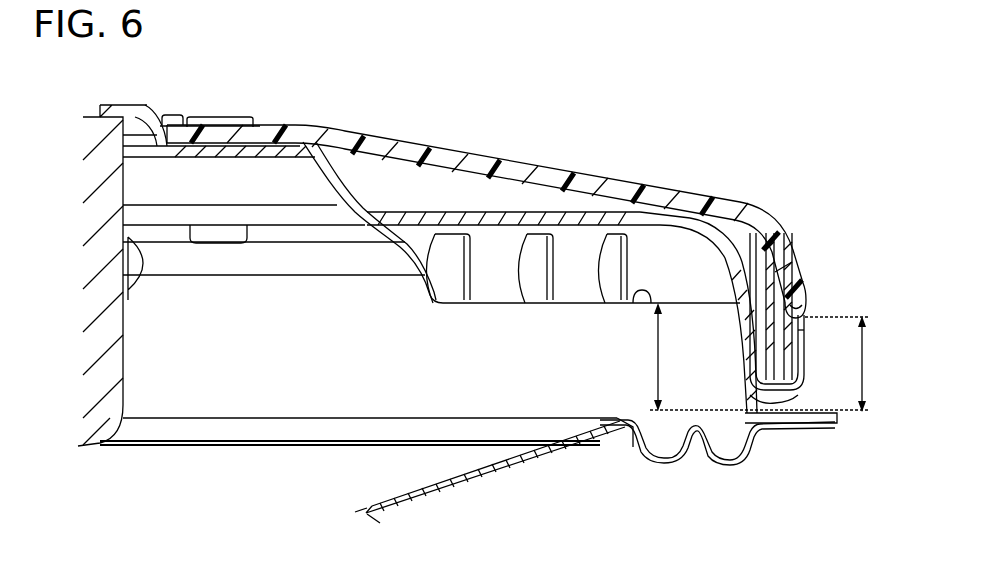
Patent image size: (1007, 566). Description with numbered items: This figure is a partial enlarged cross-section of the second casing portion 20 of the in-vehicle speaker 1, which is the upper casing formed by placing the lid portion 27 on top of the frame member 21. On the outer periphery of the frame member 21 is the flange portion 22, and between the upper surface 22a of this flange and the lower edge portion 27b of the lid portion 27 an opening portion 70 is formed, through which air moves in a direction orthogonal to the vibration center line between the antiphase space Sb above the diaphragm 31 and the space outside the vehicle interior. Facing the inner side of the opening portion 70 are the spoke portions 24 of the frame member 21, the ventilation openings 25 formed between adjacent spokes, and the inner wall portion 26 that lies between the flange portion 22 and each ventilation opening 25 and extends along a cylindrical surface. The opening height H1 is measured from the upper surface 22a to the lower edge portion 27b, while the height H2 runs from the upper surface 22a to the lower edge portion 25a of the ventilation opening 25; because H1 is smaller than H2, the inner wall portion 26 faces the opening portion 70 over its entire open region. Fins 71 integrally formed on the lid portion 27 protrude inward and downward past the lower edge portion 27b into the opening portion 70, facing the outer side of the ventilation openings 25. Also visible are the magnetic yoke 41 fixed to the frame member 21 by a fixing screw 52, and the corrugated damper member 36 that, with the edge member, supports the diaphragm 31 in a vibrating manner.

The in-vehicle speaker 1 is at (624, 84).
The second casing portion 20 is at (509, 165).
The frame member 21 is at (417, 203).
The flange portion 22 is at (830, 423).
The upper surface of the flange portion 22a is at (790, 403).
The spoke portion 24 is at (500, 205).
The ventilation opening 25 is at (615, 313).
The lower edge portion of the ventilation opening 25a is at (636, 300).
The inner wall portion 26 is at (522, 365).
The lid portion 27 is at (382, 128).
The lower edge portion of the lid portion 27b is at (807, 323).
The diaphragm 31 is at (450, 490).
The damper member 36 is at (727, 460).
The magnetic yoke 41 is at (122, 360).
The fixing screw 52 is at (232, 115).
The opening portion 70 is at (813, 372).
The fin 71 is at (608, 262).
The antiphase space Sb is at (263, 375).
The opening height of the opening portion H1 is at (837, 364).
The height of the inner wall portion H2 is at (760, 357).